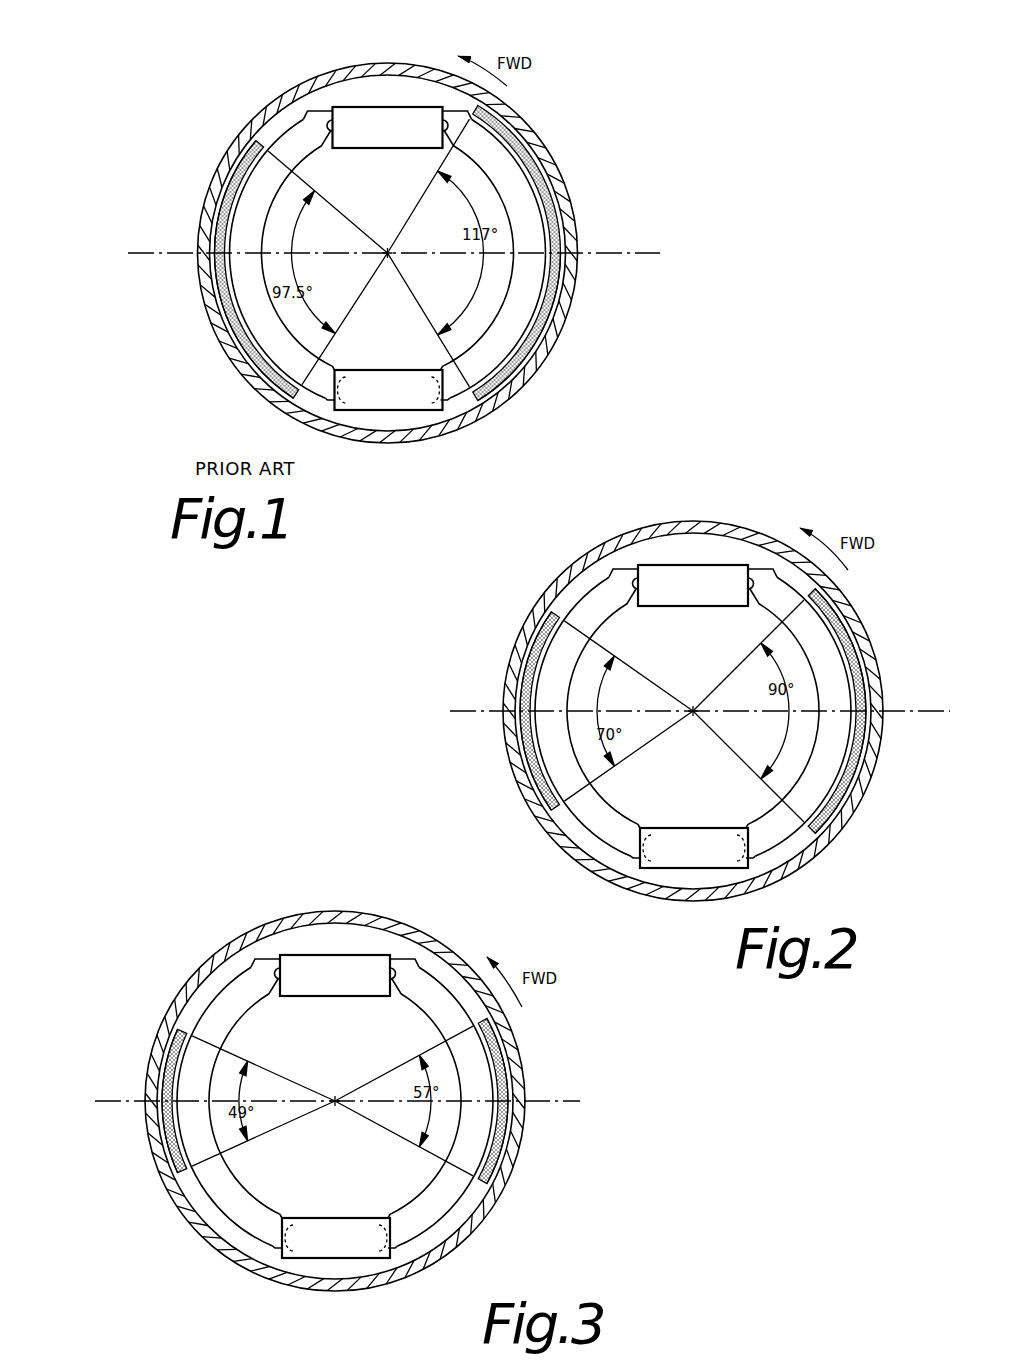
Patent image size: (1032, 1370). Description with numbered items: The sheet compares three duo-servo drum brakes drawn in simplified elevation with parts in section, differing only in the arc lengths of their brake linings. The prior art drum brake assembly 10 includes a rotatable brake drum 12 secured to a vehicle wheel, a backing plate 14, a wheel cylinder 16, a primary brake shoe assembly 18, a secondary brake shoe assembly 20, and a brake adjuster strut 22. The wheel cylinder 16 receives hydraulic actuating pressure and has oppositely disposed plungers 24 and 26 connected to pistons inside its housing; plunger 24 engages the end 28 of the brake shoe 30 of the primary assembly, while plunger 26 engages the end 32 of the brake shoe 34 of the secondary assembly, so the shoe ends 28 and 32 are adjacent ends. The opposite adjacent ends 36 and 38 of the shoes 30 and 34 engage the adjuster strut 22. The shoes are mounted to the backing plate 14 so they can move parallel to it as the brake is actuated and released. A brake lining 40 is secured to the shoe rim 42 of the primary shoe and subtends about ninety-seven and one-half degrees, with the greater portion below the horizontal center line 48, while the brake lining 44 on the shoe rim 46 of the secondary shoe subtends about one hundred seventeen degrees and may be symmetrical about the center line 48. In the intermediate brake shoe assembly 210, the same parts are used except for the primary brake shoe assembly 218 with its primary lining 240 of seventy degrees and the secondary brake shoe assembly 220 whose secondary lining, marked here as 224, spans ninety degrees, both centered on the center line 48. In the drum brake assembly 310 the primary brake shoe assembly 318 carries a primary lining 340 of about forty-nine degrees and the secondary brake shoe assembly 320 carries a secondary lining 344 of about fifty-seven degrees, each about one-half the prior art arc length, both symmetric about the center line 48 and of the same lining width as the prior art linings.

In FIG. 1, the drum brake assembly 10 is at (216, 108).
In FIG. 1, the brake drum 12 is at (228, 170).
In FIG. 2, the brake drum 12 is at (600, 548).
In FIG. 3, the brake drum 12 is at (267, 920).
In FIG. 1, the backing plate 14 is at (376, 110).
In FIG. 2, the backing plate 14 is at (658, 548).
In FIG. 3, the backing plate 14 is at (308, 937).
In FIG. 1, the wheel cylinder 16 is at (380, 115).
In FIG. 2, the wheel cylinder 16 is at (690, 572).
In FIG. 3, the wheel cylinder 16 is at (358, 962).
In FIG. 1, the primary brake shoe assembly 18 is at (220, 203).
In FIG. 1, the secondary brake shoe assembly 20 is at (548, 200).
In FIG. 1, the brake adjuster strut 22 is at (400, 392).
In FIG. 2, the brake adjuster strut 22 is at (703, 850).
In FIG. 3, the brake adjuster strut 22 is at (350, 1247).
In FIG. 1, the plunger 24 is at (333, 130).
In FIG. 2, the plunger 24 is at (637, 590).
In FIG. 3, the plunger 24 is at (278, 975).
In FIG. 1, the plunger 26 is at (445, 130).
In FIG. 2, the plunger 26 is at (750, 590).
In FIG. 3, the plunger 26 is at (393, 975).
In FIG. 1, the end of brake shoe 28 is at (308, 112).
In FIG. 1, the brake shoe 30 is at (237, 237).
In FIG. 2, the brake shoe 30 is at (553, 663).
In FIG. 3, the brake shoe 30 is at (227, 988).
In FIG. 1, the end of brake shoe 32 is at (462, 110).
In FIG. 2, the end of brake shoe 32 is at (762, 575).
In FIG. 3, the end of brake shoe 32 is at (398, 975).
In FIG. 1, the brake shoe 34 is at (520, 183).
In FIG. 2, the brake shoe 34 is at (788, 597).
In FIG. 3, the brake shoe 34 is at (438, 992).
In FIG. 1, the end of brake shoe 36 is at (322, 405).
In FIG. 2, the end of brake shoe 36 is at (636, 862).
In FIG. 3, the end of brake shoe 36 is at (275, 1240).
In FIG. 1, the end of brake shoe 38 is at (455, 403).
In FIG. 2, the end of brake shoe 38 is at (770, 856).
In FIG. 3, the end of brake shoe 38 is at (398, 1248).
In FIG. 1, the brake lining 40 is at (200, 310).
In FIG. 1, the shoe rim 42 is at (228, 347).
In FIG. 2, the shoe rim 42 is at (525, 765).
In FIG. 3, the shoe rim 42 is at (200, 1185).
In FIG. 1, the brake lining 44 is at (549, 300).
In FIG. 1, the shoe rim 46 is at (549, 330).
In FIG. 2, the shoe rim 46 is at (835, 806).
In FIG. 3, the shoe rim 46 is at (500, 1160).
In FIG. 1, the horizontal center line 48 is at (628, 253).
In FIG. 2, the horizontal center line 48 is at (903, 715).
In FIG. 3, the horizontal center line 48 is at (548, 1102).
In FIG. 2, the brake shoe assembly 210 is at (560, 575).
In FIG. 2, the primary brake shoe assembly 218 is at (530, 636).
In FIG. 2, the secondary brake shoe assembly 220 is at (827, 622).
In FIG. 2, the secondary lining leading portion 224 is at (860, 635).
In FIG. 2, the primary lining 240 is at (523, 690).
In FIG. 3, the drum brake assembly 310 is at (198, 922).
In FIG. 3, the primary shoe lining 318 is at (198, 1002).
In FIG. 3, the secondary shoe lining 320 is at (482, 1046).
In FIG. 3, the primary lining 340 is at (177, 1058).
In FIG. 3, the secondary lining 344 is at (510, 1068).